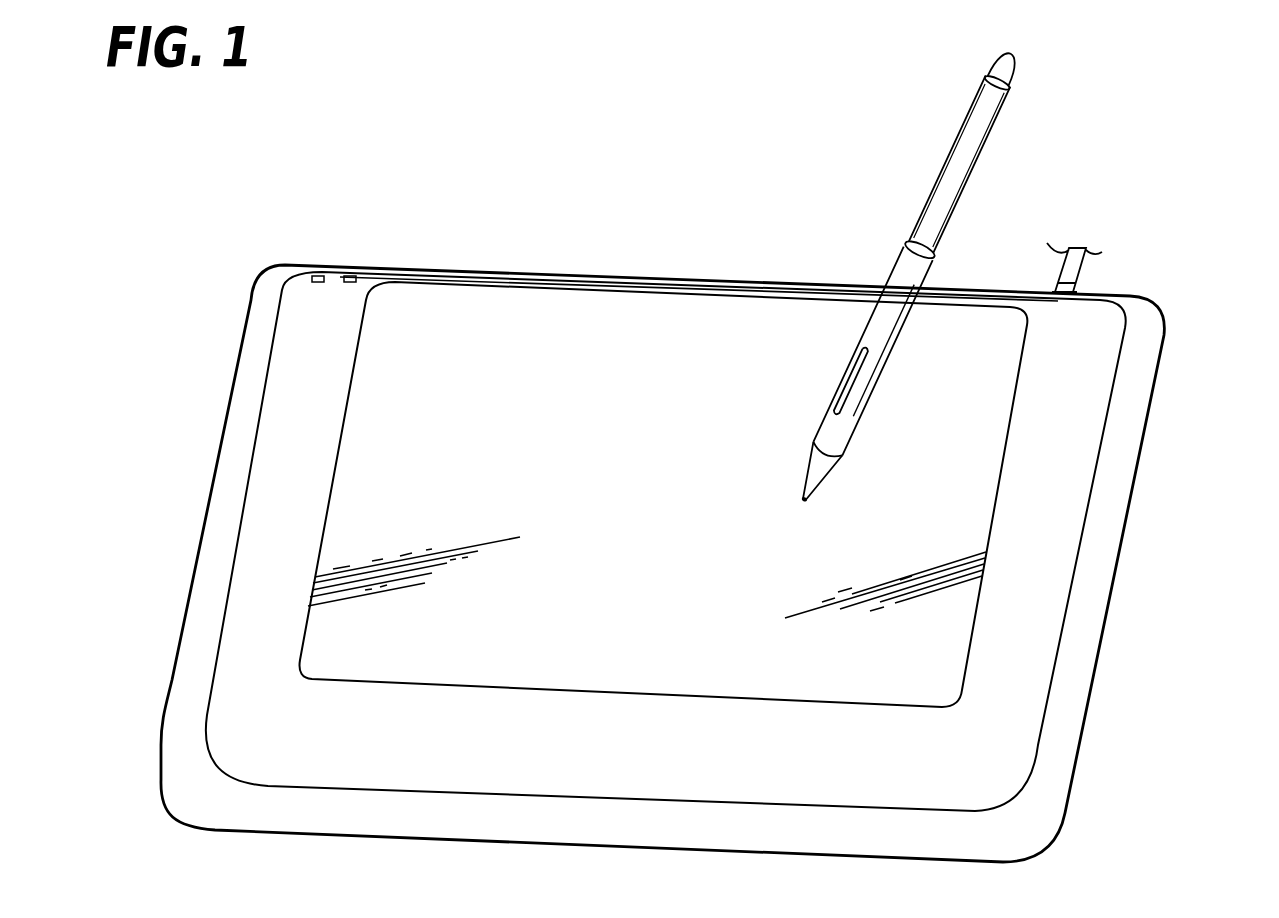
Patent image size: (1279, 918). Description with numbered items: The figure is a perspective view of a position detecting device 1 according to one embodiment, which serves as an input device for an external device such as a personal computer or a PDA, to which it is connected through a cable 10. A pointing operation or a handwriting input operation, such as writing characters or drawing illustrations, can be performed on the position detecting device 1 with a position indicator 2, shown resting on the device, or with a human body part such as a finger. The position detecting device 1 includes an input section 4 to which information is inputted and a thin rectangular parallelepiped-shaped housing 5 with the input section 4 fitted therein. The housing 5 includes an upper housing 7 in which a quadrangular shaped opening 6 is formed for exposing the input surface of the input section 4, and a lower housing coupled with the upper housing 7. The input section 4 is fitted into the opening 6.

The position detecting device 1 is at (1167, 199).
The position indicator 2 is at (965, 140).
The input section 4 is at (740, 370).
The housing 5 is at (1037, 597).
The opening 6 is at (577, 290).
The upper housing 7 is at (1068, 673).
The cable 10 is at (1087, 275).